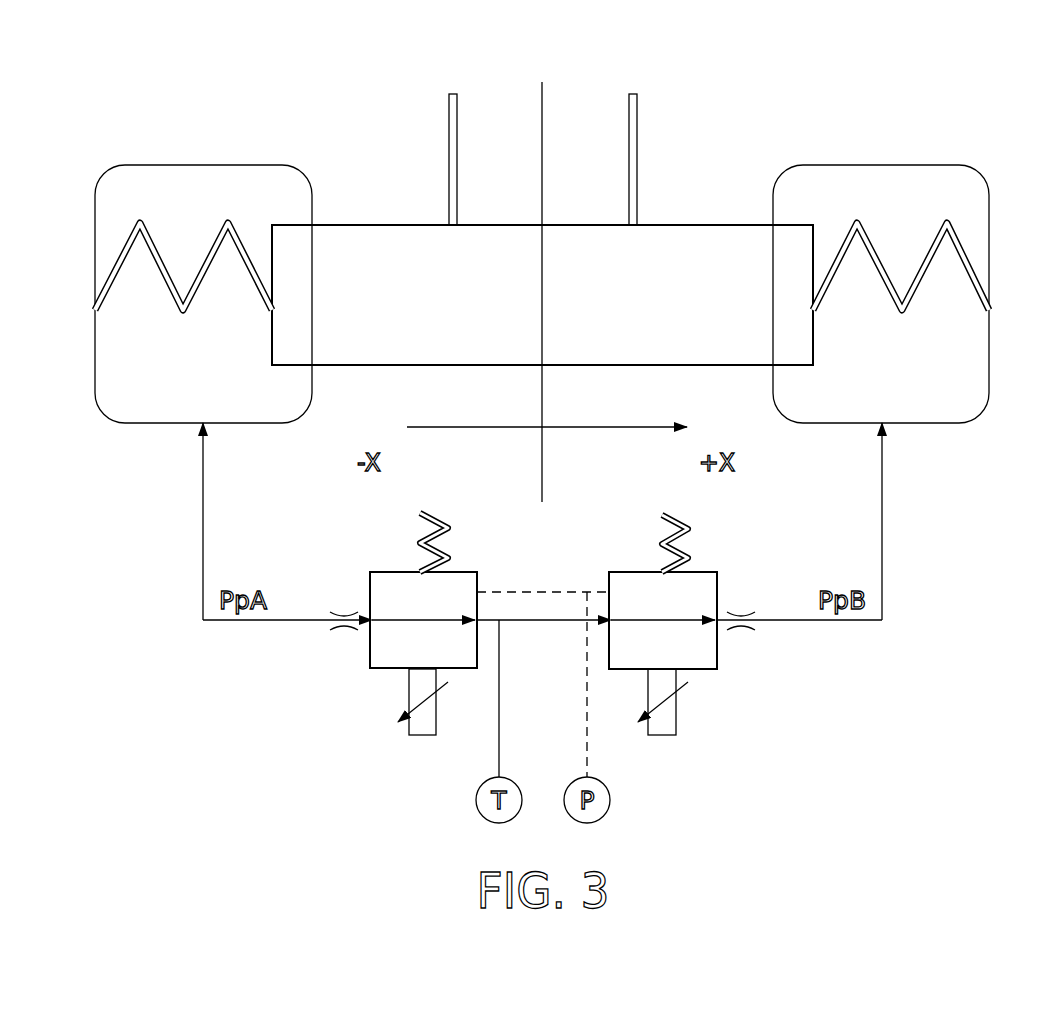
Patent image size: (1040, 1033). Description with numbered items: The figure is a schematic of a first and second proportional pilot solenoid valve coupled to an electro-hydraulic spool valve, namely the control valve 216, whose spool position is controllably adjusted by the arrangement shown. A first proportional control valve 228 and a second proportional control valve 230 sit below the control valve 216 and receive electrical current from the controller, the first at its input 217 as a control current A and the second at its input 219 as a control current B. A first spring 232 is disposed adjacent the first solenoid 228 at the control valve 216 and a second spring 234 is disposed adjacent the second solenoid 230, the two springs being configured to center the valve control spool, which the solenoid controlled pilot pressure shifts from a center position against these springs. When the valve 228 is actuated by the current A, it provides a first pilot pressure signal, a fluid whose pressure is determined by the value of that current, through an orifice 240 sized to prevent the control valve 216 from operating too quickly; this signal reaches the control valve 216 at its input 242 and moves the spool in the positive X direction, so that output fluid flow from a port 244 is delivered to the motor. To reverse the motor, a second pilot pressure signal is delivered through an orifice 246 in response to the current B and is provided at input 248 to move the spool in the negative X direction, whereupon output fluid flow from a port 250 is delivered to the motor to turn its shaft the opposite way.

The control valve 216 is at (707, 237).
The port 244 is at (449, 130).
The port 250 is at (636, 130).
The input 242 is at (200, 425).
The input 248 is at (885, 425).
The first proportional control valve 228 is at (372, 652).
The second proportional control valve 230 is at (710, 585).
The first spring 232 is at (437, 517).
The second spring 234 is at (672, 515).
The orifice 240 is at (342, 616).
The orifice 246 is at (740, 631).
The input 217 is at (425, 731).
The input 219 is at (660, 731).